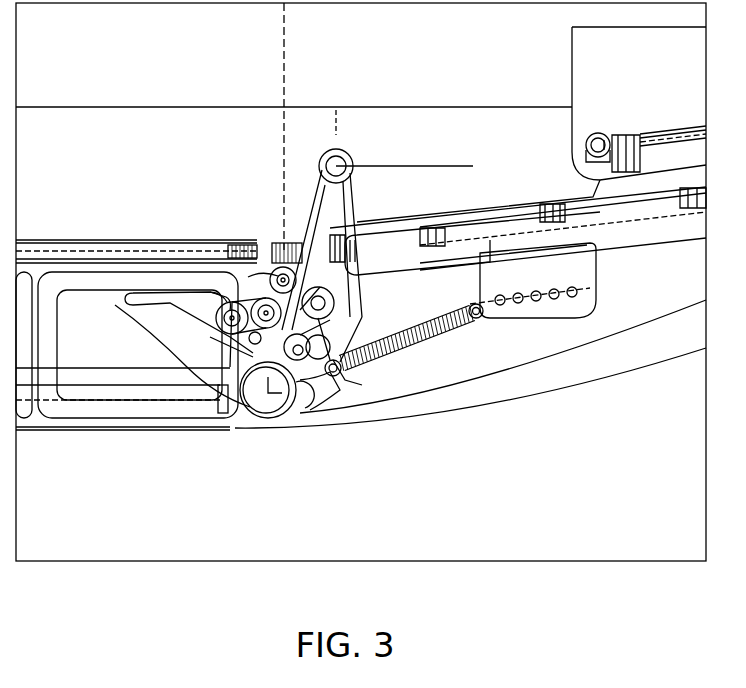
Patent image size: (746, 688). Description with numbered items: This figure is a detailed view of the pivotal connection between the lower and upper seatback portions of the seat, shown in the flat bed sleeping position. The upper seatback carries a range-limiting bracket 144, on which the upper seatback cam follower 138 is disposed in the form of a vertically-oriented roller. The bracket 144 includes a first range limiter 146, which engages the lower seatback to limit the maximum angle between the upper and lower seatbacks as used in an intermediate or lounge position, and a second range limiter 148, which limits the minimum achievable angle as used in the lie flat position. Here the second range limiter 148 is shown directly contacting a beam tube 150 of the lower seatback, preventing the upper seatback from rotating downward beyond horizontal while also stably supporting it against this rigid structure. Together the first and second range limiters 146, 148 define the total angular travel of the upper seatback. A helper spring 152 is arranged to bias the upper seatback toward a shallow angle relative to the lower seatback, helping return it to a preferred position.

The upper seatback cam follower 138 is at (232, 302).
The range-limiting bracket 144 is at (392, 340).
The first range limiter 146 is at (180, 295).
The second range limiter 148 is at (305, 402).
The beam tube 150 is at (267, 397).
The helper spring 152 is at (432, 340).